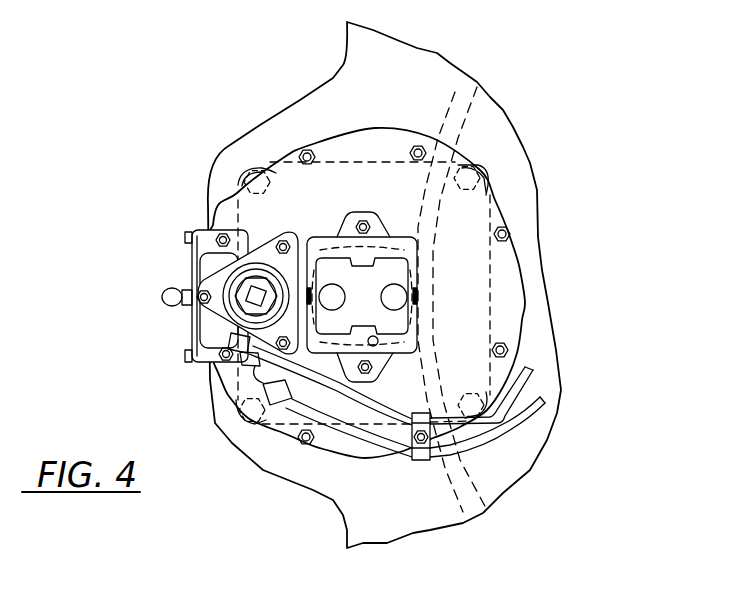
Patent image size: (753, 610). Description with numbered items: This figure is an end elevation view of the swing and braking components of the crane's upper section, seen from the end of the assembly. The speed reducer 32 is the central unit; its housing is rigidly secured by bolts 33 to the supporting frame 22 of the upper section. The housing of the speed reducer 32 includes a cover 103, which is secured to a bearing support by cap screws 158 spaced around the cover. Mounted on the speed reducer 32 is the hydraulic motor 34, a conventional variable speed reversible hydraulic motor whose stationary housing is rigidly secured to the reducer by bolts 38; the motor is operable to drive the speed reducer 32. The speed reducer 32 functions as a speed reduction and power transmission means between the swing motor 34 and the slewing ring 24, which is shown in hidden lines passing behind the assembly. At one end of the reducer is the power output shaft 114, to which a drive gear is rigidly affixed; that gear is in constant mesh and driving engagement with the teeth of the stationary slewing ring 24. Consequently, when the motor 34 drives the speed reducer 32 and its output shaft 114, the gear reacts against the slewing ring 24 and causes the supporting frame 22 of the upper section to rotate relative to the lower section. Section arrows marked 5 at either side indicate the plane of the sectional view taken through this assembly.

The supporting frame 22 is at (420, 526).
The slewing ring 24 is at (455, 80).
The speed reducer 32 is at (231, 184).
The bolts 33 is at (485, 170).
The hydraulic motor 34 is at (378, 319).
The bolts 38 is at (368, 222).
The cover 103 is at (513, 270).
The power output shaft 114 is at (330, 233).
The cap screws 158 is at (504, 234).
The section line 5 is at (135, 295).